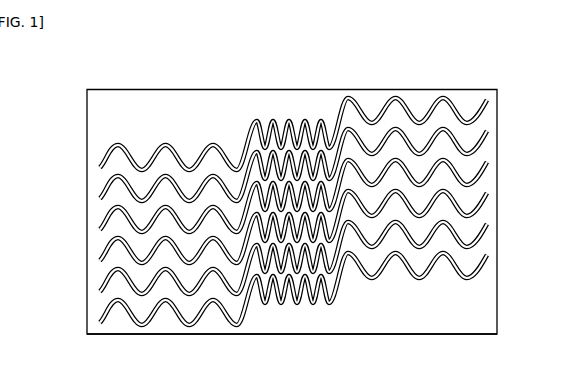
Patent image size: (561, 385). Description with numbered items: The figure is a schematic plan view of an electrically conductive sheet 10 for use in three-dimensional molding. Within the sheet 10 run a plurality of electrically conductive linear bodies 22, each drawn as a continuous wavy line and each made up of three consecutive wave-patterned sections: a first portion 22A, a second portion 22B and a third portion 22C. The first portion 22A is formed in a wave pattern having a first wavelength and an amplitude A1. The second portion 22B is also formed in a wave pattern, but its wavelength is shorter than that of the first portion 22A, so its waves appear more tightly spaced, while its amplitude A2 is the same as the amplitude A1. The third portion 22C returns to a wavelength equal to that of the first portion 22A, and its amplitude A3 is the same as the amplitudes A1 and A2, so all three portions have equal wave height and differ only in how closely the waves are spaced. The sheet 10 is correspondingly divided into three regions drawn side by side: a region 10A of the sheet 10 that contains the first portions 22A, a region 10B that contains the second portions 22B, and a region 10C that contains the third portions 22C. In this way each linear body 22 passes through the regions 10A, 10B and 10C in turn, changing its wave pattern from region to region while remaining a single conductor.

The electrically conductive sheet 10 is at (66, 84).
The region of the sheet including the first portions 10A is at (88, 339).
The region of the sheet including the second portions 10B is at (250, 339).
The region of the sheet including the third portions 10C is at (497, 339).
The electrically conductive linear body 22 is at (297, 181).
The first portion 22A is at (97, 116).
The second portion 22B is at (252, 116).
The third portion 22C is at (333, 110).
The amplitude of the first portion A1 is at (118, 170).
The amplitude of the second portion A2 is at (265, 148).
The amplitude of the third portion A3 is at (445, 98).